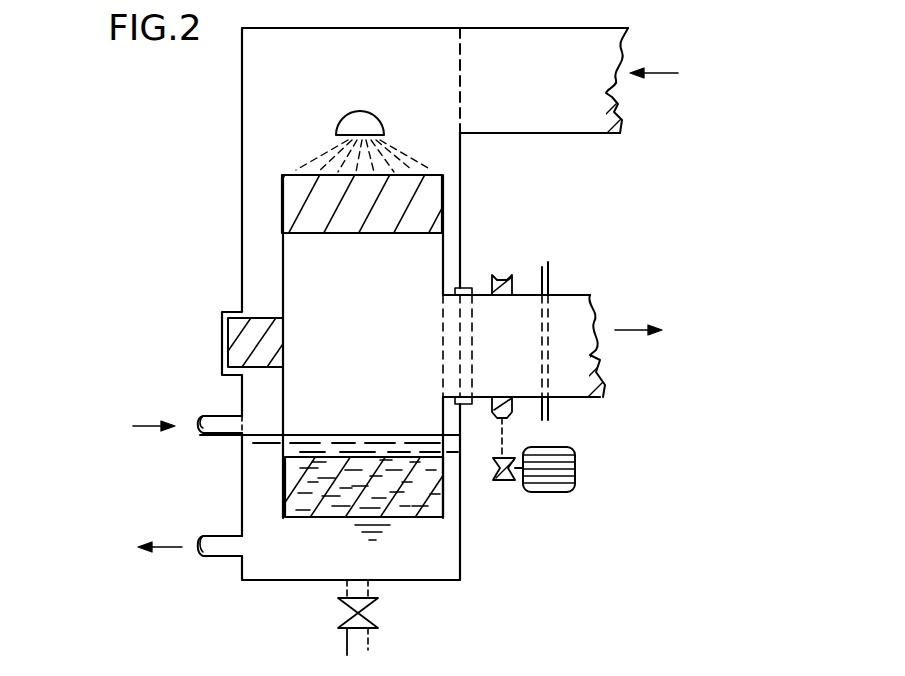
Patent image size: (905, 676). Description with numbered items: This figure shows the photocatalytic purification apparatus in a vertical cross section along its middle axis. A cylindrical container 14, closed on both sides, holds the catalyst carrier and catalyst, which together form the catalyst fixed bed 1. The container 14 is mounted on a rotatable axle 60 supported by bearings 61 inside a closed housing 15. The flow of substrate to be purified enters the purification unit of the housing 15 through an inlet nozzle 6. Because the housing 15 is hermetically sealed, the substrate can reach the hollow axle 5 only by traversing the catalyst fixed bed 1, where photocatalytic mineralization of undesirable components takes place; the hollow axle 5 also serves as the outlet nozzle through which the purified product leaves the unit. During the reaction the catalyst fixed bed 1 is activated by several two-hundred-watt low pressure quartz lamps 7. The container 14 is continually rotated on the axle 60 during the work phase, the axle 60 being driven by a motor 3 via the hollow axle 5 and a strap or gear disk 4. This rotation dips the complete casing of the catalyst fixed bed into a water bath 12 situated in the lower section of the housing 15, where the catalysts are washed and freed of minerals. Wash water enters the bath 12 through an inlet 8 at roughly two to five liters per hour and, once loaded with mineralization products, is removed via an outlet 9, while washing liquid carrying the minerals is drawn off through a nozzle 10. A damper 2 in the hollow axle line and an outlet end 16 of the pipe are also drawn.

The catalyst fixed bed 1 is at (389, 214).
The damper 2 is at (548, 262).
The motor 3 is at (553, 492).
The strap or gear disk 4 is at (500, 275).
The hollow axle 5 is at (511, 366).
The inlet nozzle 6 is at (557, 135).
The low pressure quartz lamps 7 is at (367, 124).
The inlet 8 is at (218, 434).
The outlet 9 is at (222, 557).
The nozzle 10 is at (338, 592).
The bath 12 is at (327, 557).
The cylindrical container 14 is at (283, 258).
The housing 15 is at (240, 148).
The outlet end 16 is at (570, 398).
The rotatable axle 60 is at (262, 370).
The bearings 61 is at (465, 288).